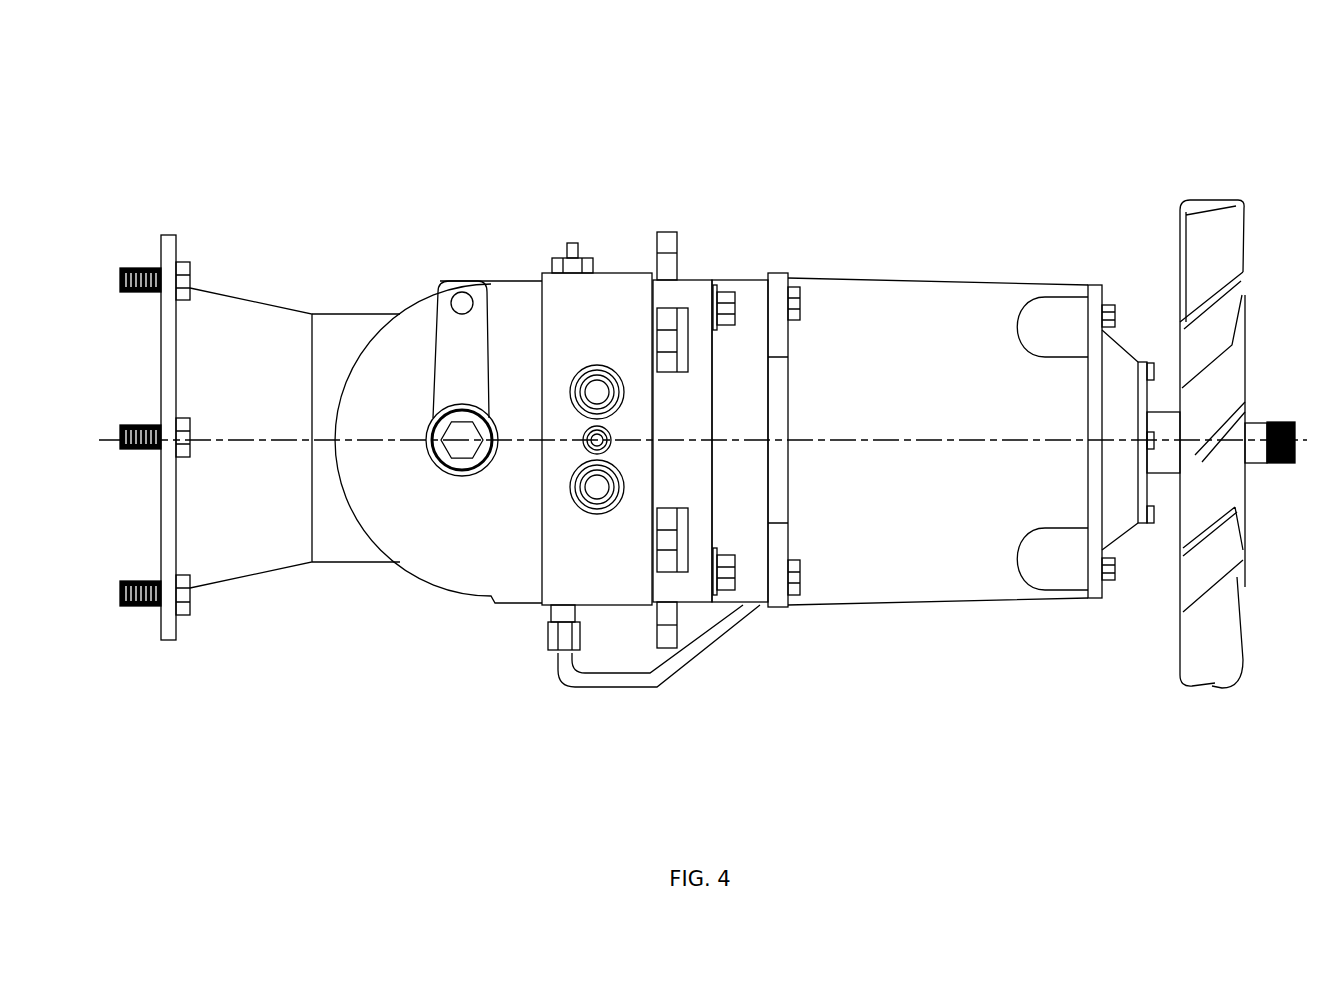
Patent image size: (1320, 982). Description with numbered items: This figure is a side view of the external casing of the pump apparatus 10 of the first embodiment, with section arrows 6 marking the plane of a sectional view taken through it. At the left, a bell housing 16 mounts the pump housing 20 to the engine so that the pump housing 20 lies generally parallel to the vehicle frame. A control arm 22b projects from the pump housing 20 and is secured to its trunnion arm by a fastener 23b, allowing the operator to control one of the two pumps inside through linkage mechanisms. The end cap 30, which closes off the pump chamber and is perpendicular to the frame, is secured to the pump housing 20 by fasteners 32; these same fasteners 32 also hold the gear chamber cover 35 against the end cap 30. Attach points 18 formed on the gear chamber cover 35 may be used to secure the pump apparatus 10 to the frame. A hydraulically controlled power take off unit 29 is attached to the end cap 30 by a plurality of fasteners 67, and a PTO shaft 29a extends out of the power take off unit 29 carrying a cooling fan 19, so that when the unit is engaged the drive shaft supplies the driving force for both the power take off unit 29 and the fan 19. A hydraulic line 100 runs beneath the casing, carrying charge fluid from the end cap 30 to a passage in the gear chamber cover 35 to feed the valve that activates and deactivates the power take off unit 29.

The pump apparatus 10 is at (198, 118).
The section line 6- 6 is at (120, 440).
The bell housing 16 is at (229, 380).
The pump housing 20 is at (381, 396).
The control arm 22b is at (443, 368).
The fastener 23b is at (463, 448).
The end cap 30 is at (583, 336).
The attach points 18 is at (680, 343).
The fasteners 32 is at (738, 305).
The gear chamber cover 35 is at (726, 396).
The fasteners 67 is at (802, 302).
The power take off unit 29 is at (918, 388).
The PTO shaft 29a is at (1252, 423).
The cooling fan 19 is at (1198, 411).
The hydraulic line 100 is at (608, 690).